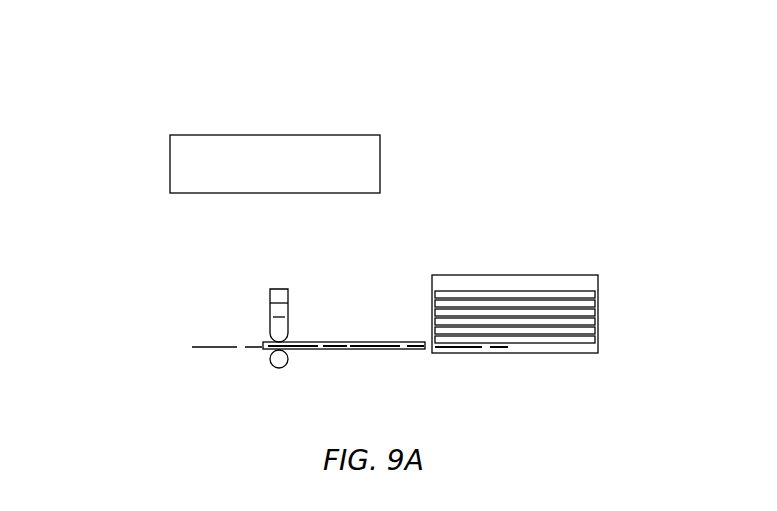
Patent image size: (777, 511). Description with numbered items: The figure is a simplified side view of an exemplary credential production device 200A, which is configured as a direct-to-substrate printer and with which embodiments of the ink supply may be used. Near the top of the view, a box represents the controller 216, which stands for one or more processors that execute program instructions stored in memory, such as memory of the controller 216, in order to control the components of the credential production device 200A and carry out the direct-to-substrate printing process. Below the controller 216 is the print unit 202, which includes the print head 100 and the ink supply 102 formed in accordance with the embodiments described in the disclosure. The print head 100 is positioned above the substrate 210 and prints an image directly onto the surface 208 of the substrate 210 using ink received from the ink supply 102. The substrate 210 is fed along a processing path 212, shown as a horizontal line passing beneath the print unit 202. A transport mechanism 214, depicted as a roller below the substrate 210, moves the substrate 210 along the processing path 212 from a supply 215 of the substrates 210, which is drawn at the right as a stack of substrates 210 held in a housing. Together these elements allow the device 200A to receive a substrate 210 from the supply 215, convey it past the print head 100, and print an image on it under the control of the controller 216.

The credential production device 200A is at (146, 54).
The controller 216 is at (205, 133).
The print unit 202 is at (336, 256).
The ink supply 102 is at (285, 290).
The print head 100 is at (278, 317).
The surface 208 is at (393, 332).
The substrate 210 is at (483, 291).
The processing path 212 is at (208, 348).
The transport mechanism 214 is at (325, 382).
The supply 215 is at (558, 275).